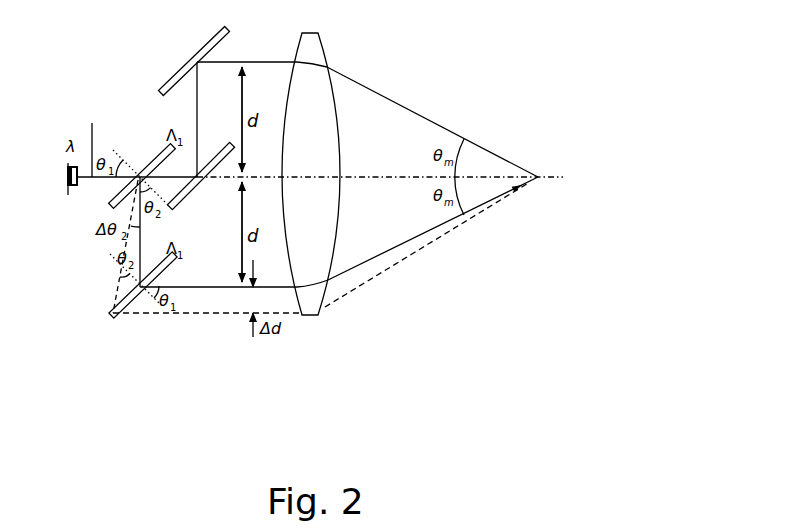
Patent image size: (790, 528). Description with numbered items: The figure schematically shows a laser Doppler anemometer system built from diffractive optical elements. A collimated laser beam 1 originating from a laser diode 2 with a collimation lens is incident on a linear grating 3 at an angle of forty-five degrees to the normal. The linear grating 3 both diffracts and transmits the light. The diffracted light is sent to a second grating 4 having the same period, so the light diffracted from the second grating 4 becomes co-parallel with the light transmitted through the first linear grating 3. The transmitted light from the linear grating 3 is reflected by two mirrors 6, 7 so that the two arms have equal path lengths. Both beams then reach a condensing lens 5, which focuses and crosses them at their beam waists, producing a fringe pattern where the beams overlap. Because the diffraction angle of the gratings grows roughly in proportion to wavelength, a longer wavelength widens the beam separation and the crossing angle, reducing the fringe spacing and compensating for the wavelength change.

The collimated laser beam 1 is at (86, 143).
The laser diode 2 is at (72, 188).
The linear grating 3 is at (153, 160).
The second grating 4 is at (115, 315).
The condensing lens 5 is at (323, 57).
The mirror 6 is at (185, 197).
The mirror 7 is at (167, 82).